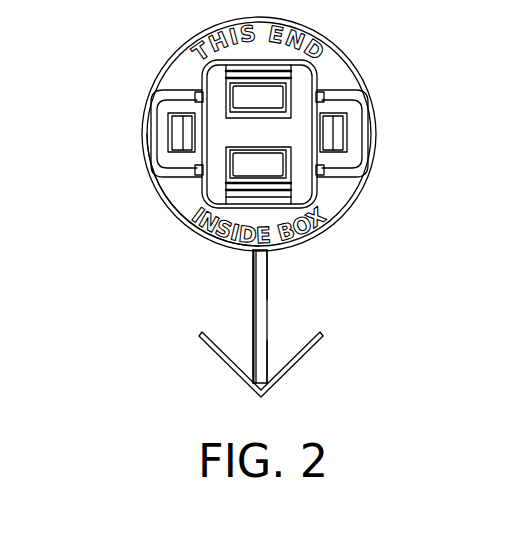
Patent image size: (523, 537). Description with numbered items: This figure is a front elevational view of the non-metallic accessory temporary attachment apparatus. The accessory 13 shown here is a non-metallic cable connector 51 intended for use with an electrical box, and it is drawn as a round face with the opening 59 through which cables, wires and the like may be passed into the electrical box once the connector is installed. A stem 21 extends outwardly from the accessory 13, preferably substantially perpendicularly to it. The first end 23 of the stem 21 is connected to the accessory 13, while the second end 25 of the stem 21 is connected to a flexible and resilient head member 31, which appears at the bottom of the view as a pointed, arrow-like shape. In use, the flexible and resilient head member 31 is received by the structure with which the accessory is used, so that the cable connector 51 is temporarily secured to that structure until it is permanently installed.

The accessory 13 is at (358, 220).
The non-metallic cable connector 51 is at (150, 214).
The opening 59 is at (230, 133).
The stem 21 is at (232, 291).
The first end 23 is at (268, 253).
The second end 25 is at (268, 372).
The flexible and resilient head member 31 is at (205, 372).